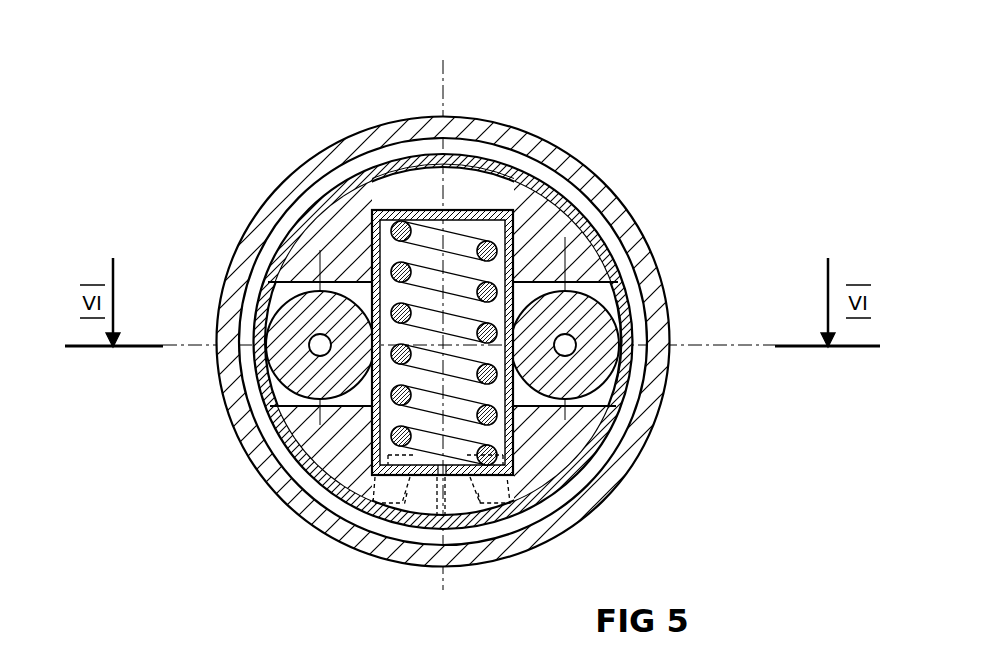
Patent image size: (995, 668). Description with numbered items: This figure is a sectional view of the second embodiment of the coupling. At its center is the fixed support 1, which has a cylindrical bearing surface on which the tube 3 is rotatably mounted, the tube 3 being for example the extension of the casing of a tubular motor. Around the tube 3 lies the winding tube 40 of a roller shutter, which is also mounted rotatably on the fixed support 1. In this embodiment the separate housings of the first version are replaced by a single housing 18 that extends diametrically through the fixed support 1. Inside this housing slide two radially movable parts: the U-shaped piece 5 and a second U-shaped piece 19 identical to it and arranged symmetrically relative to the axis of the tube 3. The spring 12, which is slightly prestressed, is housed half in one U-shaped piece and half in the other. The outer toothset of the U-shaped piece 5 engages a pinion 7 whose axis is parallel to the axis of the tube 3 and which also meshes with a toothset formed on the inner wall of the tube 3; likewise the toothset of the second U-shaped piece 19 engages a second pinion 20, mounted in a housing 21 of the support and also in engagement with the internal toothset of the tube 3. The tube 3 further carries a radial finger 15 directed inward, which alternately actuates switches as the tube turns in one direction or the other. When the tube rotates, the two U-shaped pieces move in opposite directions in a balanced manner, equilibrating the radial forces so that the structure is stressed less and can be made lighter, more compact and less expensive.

The fixed support 1 is at (543, 450).
The tube 3 is at (482, 160).
The U-shaped piece 5 is at (313, 435).
The pinion 7 is at (290, 365).
The spring 12 is at (497, 248).
The radial finger 15 is at (442, 525).
The single housing 18 is at (418, 187).
The second U-shaped piece 19 is at (513, 297).
The second pinion 20 is at (623, 343).
The housing 21 is at (600, 293).
The winding tube 40 is at (645, 433).